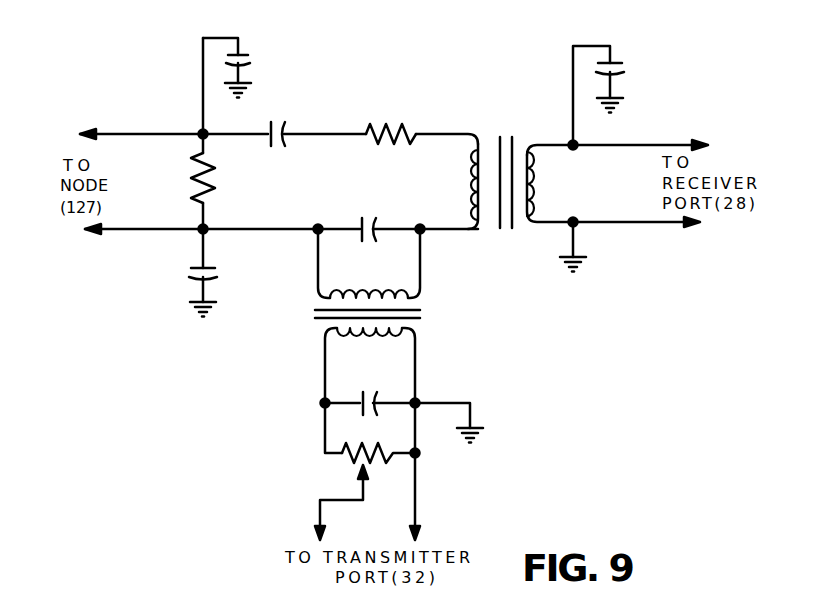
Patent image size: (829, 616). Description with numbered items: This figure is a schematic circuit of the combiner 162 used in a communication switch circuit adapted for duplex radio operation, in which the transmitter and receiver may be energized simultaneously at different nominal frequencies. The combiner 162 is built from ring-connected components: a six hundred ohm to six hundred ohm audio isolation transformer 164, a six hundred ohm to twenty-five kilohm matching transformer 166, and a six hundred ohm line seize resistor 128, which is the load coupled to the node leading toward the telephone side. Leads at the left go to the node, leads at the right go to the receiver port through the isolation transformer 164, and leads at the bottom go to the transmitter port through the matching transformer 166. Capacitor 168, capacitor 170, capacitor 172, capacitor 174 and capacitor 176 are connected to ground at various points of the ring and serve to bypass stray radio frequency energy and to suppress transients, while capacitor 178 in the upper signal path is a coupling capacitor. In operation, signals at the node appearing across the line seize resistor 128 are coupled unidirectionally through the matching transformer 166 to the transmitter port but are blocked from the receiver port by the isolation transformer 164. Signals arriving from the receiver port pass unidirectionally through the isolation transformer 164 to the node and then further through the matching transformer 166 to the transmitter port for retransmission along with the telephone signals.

The line seize resistor 128 is at (222, 190).
The combiner 162 is at (410, 93).
The audio isolation transformer 164 is at (530, 118).
The matching transformer 166 is at (425, 316).
The capacitor 168 is at (248, 53).
The capacitor 170 is at (400, 198).
The capacitor 172 is at (633, 69).
The capacitor 174 is at (178, 272).
The capacitor 176 is at (388, 397).
The coupling capacitor 178 is at (283, 110).